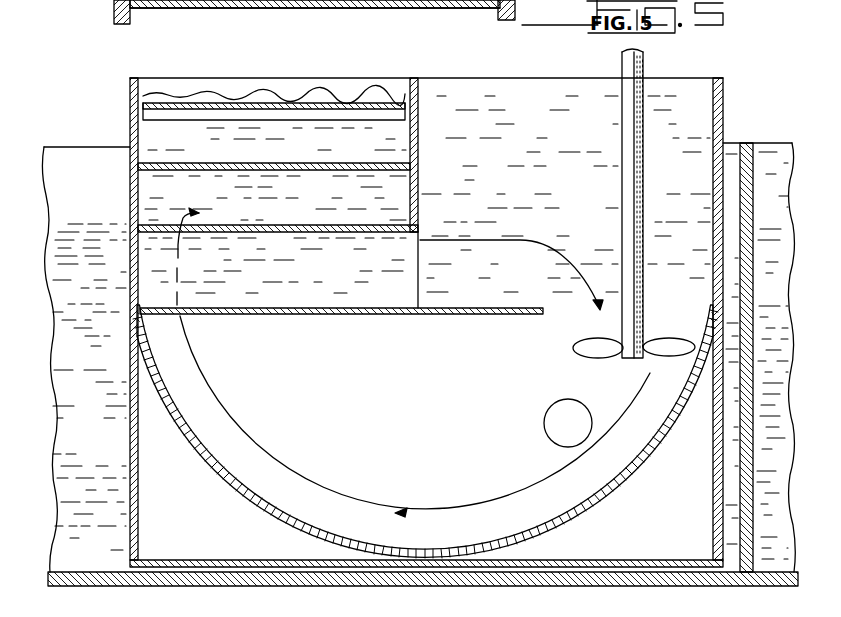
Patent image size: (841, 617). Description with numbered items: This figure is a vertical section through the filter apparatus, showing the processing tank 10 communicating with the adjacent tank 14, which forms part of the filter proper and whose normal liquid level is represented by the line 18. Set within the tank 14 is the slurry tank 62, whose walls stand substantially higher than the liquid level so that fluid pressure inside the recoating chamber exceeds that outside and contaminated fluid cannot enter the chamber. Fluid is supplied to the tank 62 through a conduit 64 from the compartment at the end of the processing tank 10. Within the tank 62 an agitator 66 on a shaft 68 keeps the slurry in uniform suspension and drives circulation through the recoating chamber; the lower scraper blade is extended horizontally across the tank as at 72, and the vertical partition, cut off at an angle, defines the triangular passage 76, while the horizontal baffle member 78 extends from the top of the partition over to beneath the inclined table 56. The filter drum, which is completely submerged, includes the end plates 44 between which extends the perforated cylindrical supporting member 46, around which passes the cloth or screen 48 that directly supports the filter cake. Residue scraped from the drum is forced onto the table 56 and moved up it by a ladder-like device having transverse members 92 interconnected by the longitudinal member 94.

The processing tank 10 is at (762, 143).
The adjacent tank 14 is at (535, 586).
The liquid level line 18 is at (90, 232).
The head members or end plates 44 is at (106, 0).
The cylindrical supporting member 46 is at (345, 0).
The cloth or screen 48 is at (236, 0).
The inclined table 56 is at (200, 165).
The tank 62 is at (723, 100).
The conduit 64 is at (425, 383).
The propeller or agitator 66 is at (573, 350).
The shaft 68 is at (643, 72).
The horizontal extension of lower scraper blade 72 is at (308, 308).
The triangular passage 76 is at (502, 208).
The horizontal partition or baffle member 78 is at (305, 225).
The transverse members 92 is at (420, 114).
The longitudinal member 94 is at (377, 103).